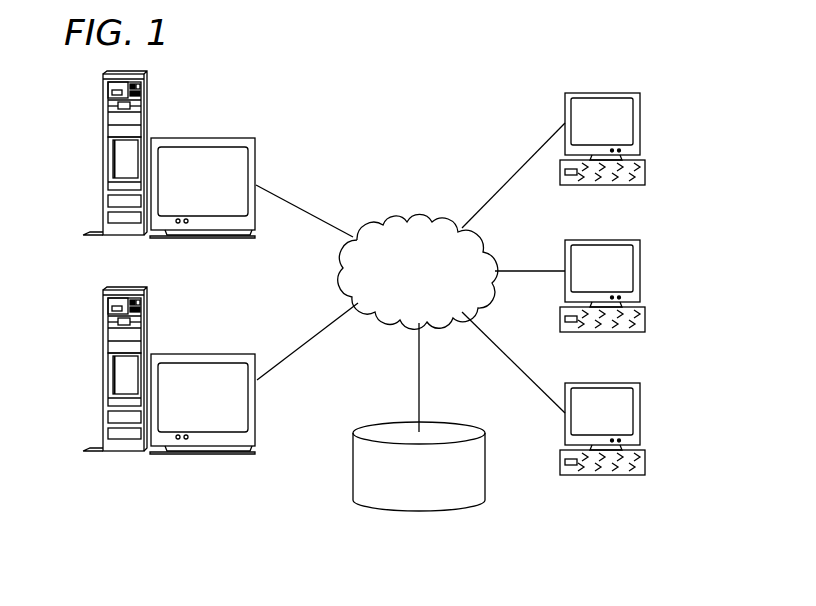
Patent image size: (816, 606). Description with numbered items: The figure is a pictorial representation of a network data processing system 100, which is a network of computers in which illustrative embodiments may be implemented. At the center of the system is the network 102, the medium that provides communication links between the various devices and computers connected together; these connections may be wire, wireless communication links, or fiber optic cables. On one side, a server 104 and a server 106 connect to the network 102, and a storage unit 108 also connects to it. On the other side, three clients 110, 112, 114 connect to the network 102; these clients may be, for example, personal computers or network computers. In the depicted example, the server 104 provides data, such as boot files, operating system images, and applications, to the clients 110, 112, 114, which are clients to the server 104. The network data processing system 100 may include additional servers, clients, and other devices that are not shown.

The network data processing system 100 is at (466, 107).
The network 102 is at (390, 222).
The server 104 is at (103, 155).
The server 106 is at (103, 371).
The storage unit 108 is at (401, 511).
The client 110 is at (641, 122).
The client 112 is at (641, 270).
The client 114 is at (641, 415).